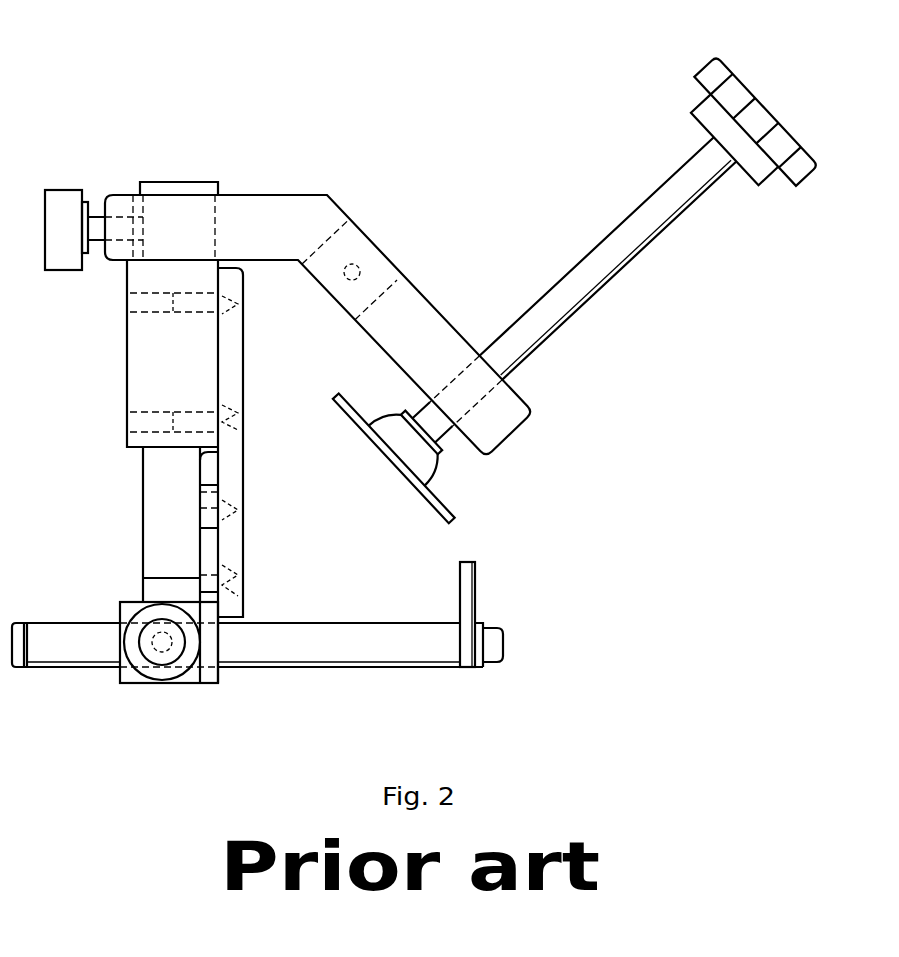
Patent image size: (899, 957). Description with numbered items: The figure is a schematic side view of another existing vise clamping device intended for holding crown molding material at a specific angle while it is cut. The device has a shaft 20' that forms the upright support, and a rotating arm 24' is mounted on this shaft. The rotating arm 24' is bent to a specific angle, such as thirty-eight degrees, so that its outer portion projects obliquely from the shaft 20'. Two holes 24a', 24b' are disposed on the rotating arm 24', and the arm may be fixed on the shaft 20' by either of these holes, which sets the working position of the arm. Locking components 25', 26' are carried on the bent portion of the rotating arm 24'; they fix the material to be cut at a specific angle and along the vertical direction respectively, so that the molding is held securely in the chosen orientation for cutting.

The shaft 20' is at (257, 471).
The rotating arm 24' is at (317, 270).
The hole 24a' is at (97, 163).
The hole 24b' is at (381, 241).
The locking component 25' is at (595, 270).
The locking component 26' is at (444, 445).